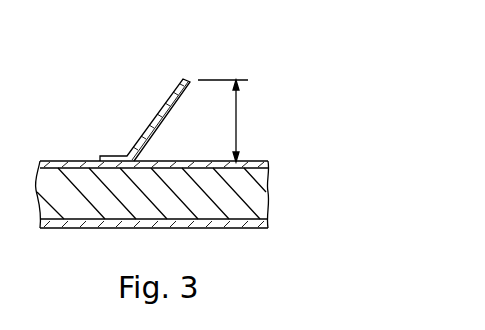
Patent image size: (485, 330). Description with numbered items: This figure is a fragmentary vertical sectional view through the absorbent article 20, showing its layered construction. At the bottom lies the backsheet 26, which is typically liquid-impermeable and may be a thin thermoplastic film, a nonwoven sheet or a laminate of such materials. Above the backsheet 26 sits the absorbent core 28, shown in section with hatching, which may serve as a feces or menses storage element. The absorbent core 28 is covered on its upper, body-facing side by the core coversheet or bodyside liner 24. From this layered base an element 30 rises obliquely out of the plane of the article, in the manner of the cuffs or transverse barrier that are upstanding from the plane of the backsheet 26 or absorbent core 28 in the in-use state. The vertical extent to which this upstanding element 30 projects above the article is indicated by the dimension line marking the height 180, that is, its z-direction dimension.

The absorbent article 20 is at (334, 151).
The core coversheet or bodyside liner 24 is at (252, 164).
The absorbent core 28 is at (260, 194).
The backsheet 26 is at (248, 228).
The flap 30 is at (150, 122).
The height 180 is at (237, 122).